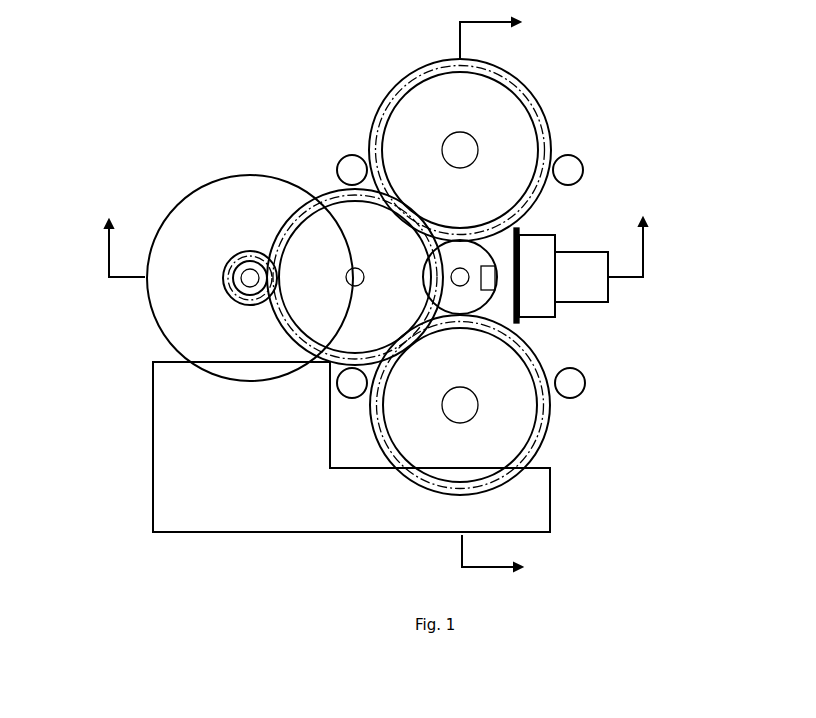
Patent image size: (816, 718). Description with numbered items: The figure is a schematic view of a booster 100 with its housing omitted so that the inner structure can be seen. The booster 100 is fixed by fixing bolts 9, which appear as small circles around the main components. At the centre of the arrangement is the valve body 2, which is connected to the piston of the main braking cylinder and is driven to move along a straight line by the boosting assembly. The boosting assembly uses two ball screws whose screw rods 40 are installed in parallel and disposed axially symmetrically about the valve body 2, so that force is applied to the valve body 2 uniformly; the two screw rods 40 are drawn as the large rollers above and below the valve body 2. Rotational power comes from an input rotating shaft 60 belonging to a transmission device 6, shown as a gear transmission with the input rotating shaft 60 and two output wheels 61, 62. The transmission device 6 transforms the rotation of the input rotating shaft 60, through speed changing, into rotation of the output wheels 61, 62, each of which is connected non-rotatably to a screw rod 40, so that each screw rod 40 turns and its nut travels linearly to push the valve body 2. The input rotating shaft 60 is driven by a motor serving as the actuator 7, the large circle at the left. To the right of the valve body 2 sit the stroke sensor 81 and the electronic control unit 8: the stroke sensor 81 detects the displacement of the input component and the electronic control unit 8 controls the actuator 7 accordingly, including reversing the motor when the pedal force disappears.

The booster 100 is at (617, 65).
The actuator 7 is at (202, 197).
The output wheel 61 is at (425, 188).
The input rotating shaft 60 is at (247, 278).
The output wheel 62 is at (403, 423).
The transmission device 6 is at (84, 318).
The screw rod 40 is at (445, 140).
The fixing bolts 9 is at (350, 170).
The valve body 2 is at (480, 298).
The stroke sensor 81 is at (592, 292).
The electronic control unit 8 is at (272, 470).